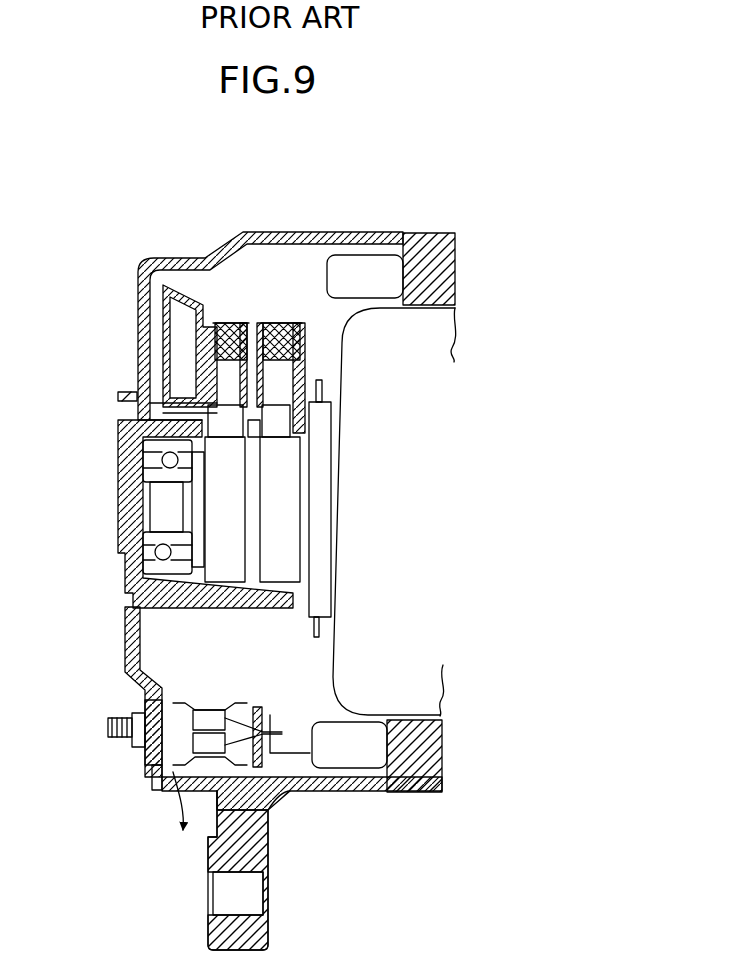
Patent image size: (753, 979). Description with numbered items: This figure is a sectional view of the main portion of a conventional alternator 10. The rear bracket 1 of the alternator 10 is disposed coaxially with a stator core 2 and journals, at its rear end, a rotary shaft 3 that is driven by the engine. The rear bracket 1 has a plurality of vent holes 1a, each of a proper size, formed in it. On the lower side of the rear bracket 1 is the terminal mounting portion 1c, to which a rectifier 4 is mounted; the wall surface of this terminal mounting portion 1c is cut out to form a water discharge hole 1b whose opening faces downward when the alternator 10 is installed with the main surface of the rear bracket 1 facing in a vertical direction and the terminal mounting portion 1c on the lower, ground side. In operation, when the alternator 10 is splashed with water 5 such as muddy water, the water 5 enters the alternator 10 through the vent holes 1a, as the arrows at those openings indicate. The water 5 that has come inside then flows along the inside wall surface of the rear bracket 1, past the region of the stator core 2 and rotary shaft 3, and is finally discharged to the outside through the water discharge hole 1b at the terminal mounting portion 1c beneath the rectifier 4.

The rear bracket 1 is at (273, 225).
The vent holes 1a is at (153, 390).
The water discharge hole 1b is at (160, 783).
The terminal mounting portion 1c is at (140, 753).
The stator core 2 is at (440, 270).
The rotary shaft 3 is at (168, 508).
The rectifier 4 is at (227, 700).
The water 5 is at (125, 367).
The alternator 10 is at (447, 415).